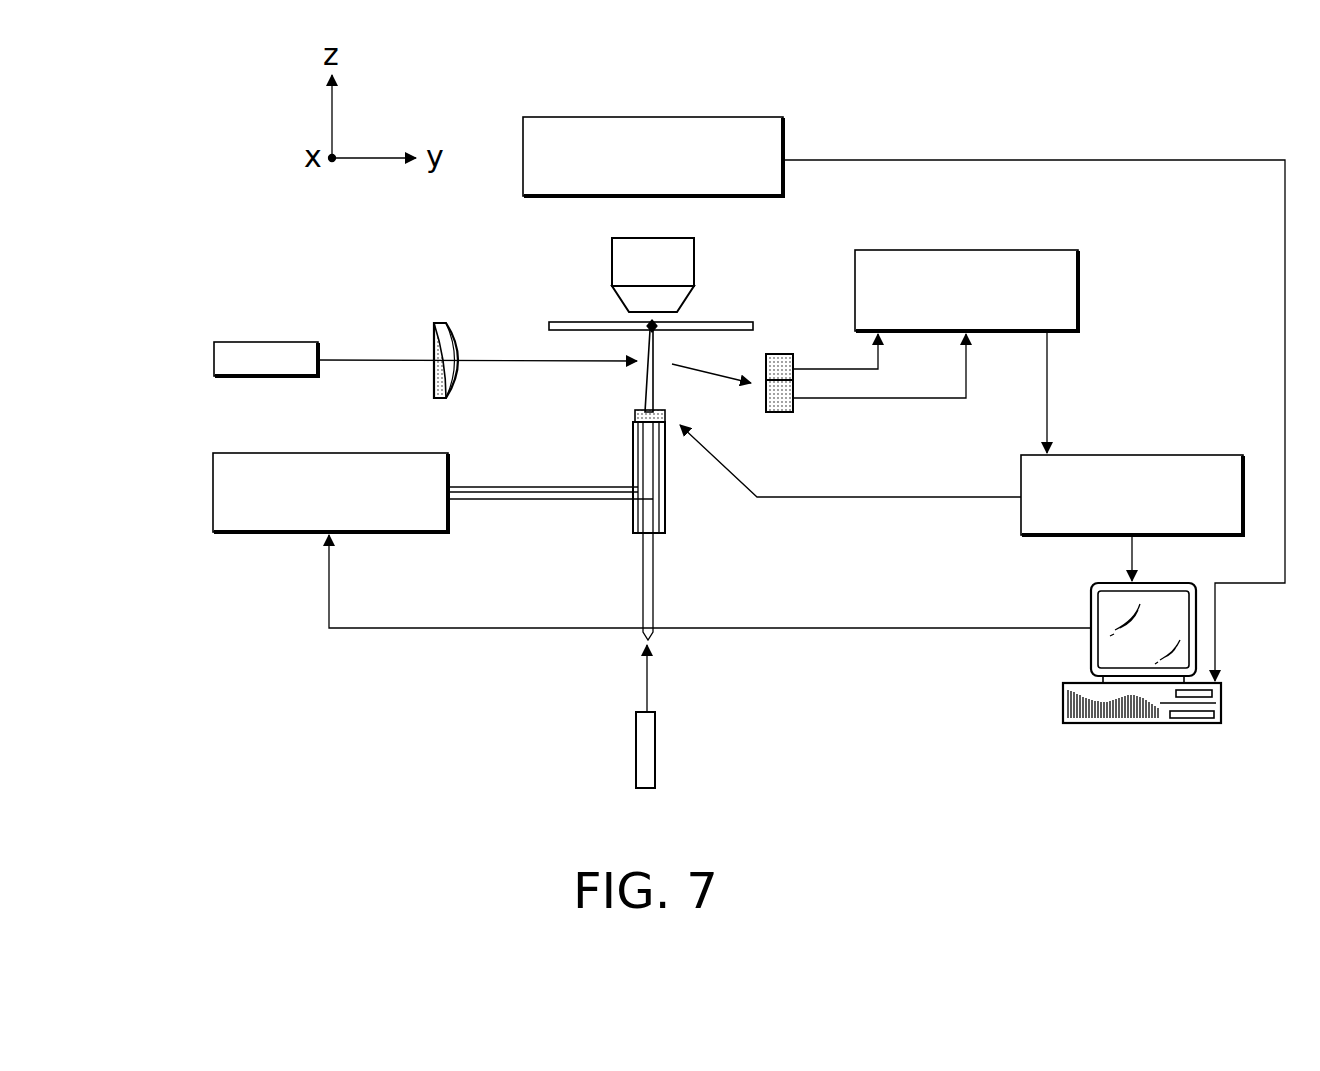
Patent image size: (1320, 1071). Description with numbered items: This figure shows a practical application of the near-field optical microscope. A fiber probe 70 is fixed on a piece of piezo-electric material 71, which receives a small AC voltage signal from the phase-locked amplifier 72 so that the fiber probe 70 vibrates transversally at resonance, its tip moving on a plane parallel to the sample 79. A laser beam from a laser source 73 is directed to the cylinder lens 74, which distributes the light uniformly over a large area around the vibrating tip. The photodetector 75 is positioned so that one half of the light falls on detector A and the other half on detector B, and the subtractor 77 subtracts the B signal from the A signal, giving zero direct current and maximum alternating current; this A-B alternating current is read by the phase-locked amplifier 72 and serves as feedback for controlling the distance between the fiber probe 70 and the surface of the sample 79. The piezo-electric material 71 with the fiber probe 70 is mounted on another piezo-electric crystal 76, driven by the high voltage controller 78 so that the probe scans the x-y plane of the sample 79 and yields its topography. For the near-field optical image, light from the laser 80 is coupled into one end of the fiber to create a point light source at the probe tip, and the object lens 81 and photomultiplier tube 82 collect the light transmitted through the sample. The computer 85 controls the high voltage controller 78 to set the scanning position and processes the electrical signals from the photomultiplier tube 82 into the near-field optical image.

The fiber probe 70 is at (645, 389).
The piezo-electric material 71 is at (635, 423).
The phase-locked amplifier 72 is at (1093, 455).
The laser 73 is at (214, 342).
The cylinder lens 74 is at (434, 323).
The photodetector 75 is at (766, 354).
The piezo-electric crystal 76 is at (512, 501).
The subtractor 77 is at (855, 250).
The high voltage controller 78 is at (213, 453).
The sample 79 is at (708, 322).
The laser 80 is at (656, 733).
The object lens 81 is at (612, 260).
The photomultiplier tube 82 is at (523, 117).
The computer 85 is at (1063, 705).